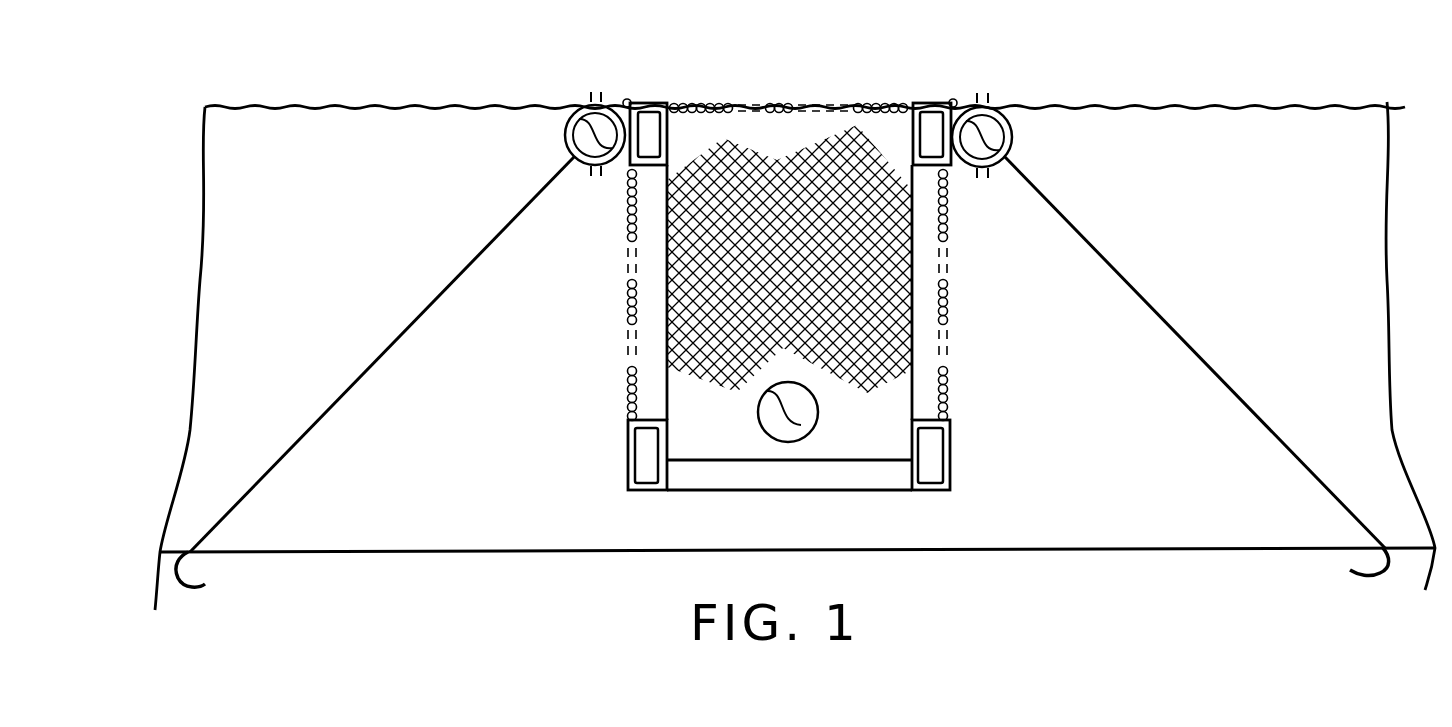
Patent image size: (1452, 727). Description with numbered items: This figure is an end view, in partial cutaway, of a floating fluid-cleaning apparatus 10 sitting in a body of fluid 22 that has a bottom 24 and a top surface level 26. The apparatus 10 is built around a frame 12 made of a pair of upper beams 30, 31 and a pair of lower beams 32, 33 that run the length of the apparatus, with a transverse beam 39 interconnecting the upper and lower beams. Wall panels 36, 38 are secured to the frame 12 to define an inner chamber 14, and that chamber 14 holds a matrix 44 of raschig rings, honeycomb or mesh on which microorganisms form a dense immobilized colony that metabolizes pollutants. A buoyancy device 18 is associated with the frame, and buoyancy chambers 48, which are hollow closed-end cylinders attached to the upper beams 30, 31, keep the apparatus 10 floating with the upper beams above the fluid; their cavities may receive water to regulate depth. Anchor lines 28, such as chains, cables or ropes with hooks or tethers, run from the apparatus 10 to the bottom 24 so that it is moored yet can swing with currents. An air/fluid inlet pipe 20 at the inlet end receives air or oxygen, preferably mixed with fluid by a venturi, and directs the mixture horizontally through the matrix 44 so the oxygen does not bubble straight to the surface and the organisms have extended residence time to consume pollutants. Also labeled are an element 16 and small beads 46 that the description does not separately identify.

The apparatus 10 is at (962, 341).
The frame 12 is at (650, 100).
The chamber 14 is at (622, 322).
The net 16 is at (845, 445).
The buoyancy device 18 is at (597, 96).
The air/fluid inlet 20 is at (764, 432).
The body of fluid 22 is at (1229, 220).
The bottom 24 is at (452, 548).
The top surface level 26 is at (432, 104).
The anchor line 28 is at (452, 280).
The upper beam 30 is at (667, 103).
The upper beam 31 is at (925, 102).
The lower beam 32 is at (628, 456).
The lower beam 33 is at (950, 458).
The wall panel 36 is at (790, 103).
The wall panel 38 is at (628, 290).
The transverse beam 39 is at (773, 490).
The matrix 44 is at (893, 371).
The bead 46 is at (627, 99).
The buoyancy chamber 48 is at (566, 137).